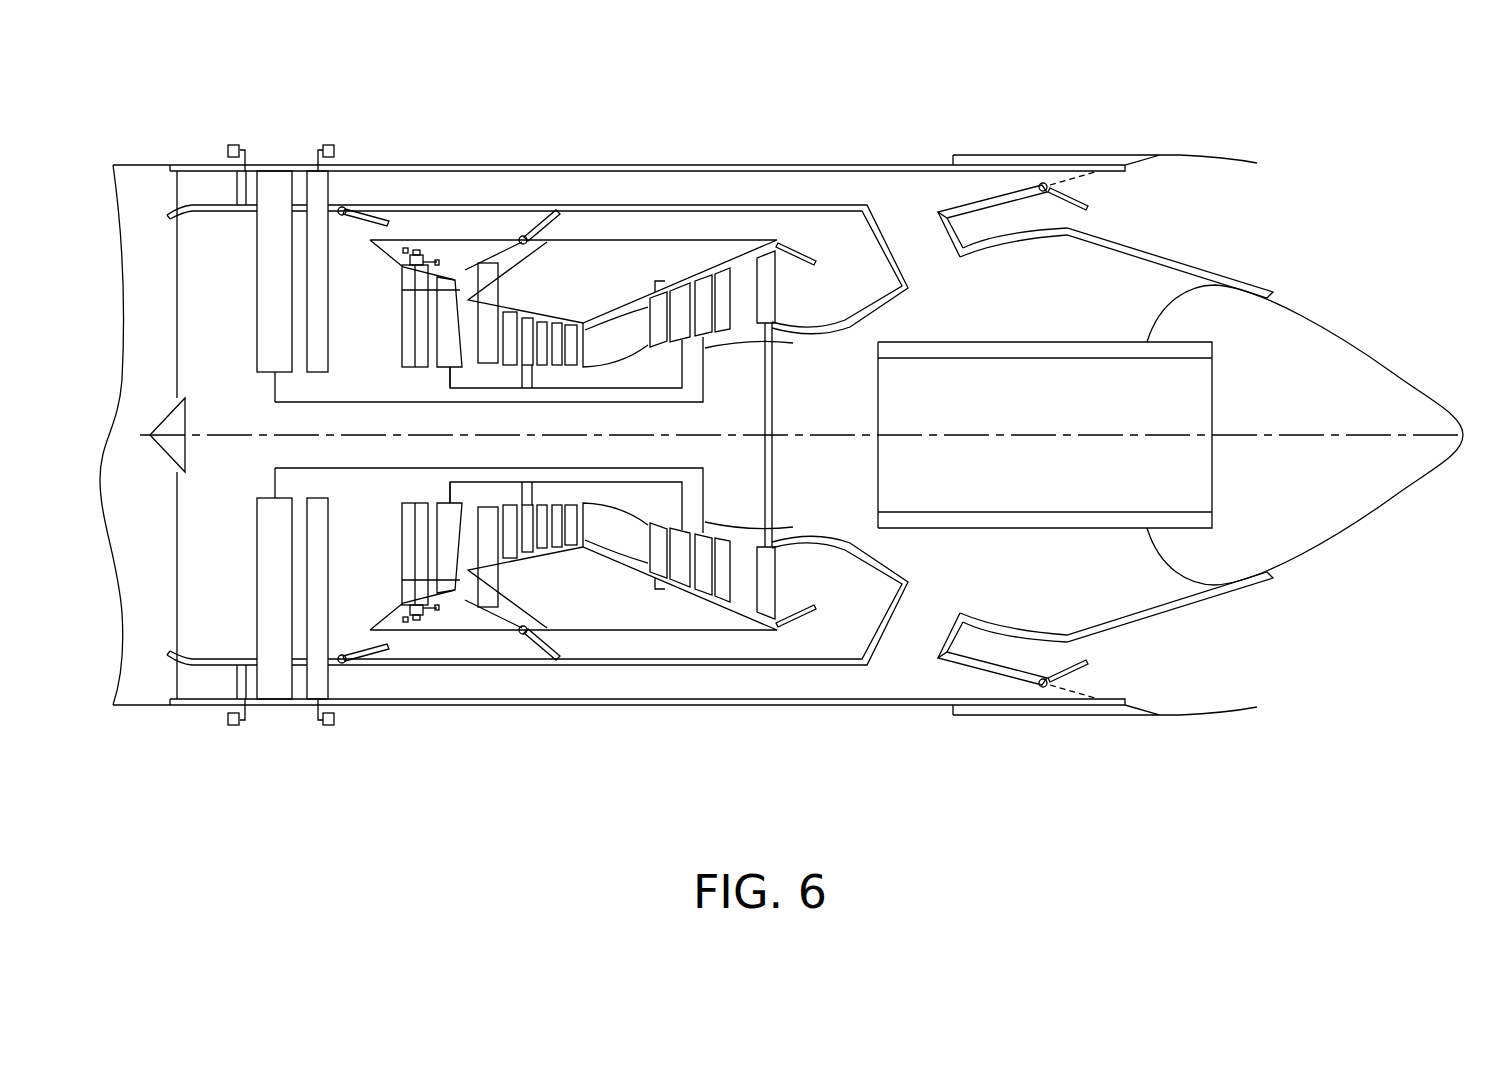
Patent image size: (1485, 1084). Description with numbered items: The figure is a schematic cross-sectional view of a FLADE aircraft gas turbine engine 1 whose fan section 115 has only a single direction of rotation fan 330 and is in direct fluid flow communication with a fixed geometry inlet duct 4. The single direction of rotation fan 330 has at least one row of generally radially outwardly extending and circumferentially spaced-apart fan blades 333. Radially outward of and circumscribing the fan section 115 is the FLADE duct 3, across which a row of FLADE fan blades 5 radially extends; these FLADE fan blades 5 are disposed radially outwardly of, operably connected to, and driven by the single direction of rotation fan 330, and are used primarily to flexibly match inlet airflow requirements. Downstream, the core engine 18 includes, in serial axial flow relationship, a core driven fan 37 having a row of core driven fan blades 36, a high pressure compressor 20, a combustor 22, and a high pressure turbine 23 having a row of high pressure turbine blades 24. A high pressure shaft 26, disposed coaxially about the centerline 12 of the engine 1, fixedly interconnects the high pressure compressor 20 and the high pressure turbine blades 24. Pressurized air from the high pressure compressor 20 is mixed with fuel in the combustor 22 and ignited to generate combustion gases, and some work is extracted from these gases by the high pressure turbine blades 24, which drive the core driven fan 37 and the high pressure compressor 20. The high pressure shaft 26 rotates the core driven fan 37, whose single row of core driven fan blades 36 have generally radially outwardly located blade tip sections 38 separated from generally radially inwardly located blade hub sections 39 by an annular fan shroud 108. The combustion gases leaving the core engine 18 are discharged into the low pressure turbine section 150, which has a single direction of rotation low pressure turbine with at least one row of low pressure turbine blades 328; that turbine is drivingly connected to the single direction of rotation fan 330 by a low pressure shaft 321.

The engine 1 is at (620, 707).
The FLADE duct 3 is at (453, 190).
The fixed geometry inlet duct 4 is at (137, 163).
The FLADE fan blades 5 is at (277, 183).
The centerline 12 is at (313, 436).
The core engine 18 is at (650, 240).
The high pressure compressor 20 is at (532, 388).
The combustor 22 is at (631, 354).
The high pressure turbine 23 is at (687, 362).
The high pressure turbine blades 24 is at (683, 300).
The high pressure shaft 26 is at (612, 388).
The core driven fan blades 36 is at (467, 300).
The core driven fan 37 is at (443, 373).
The blade tip sections 38 is at (443, 290).
The blade hub sections 39 is at (445, 343).
The annular fan shroud 108 is at (457, 290).
The fan section 115 is at (268, 737).
The low pressure turbine section 150 is at (705, 258).
The low pressure shaft 321 is at (500, 470).
The low pressure turbine blades 328 is at (705, 293).
The single direction of rotation fan 330 is at (273, 497).
The fan blades 333 is at (257, 595).